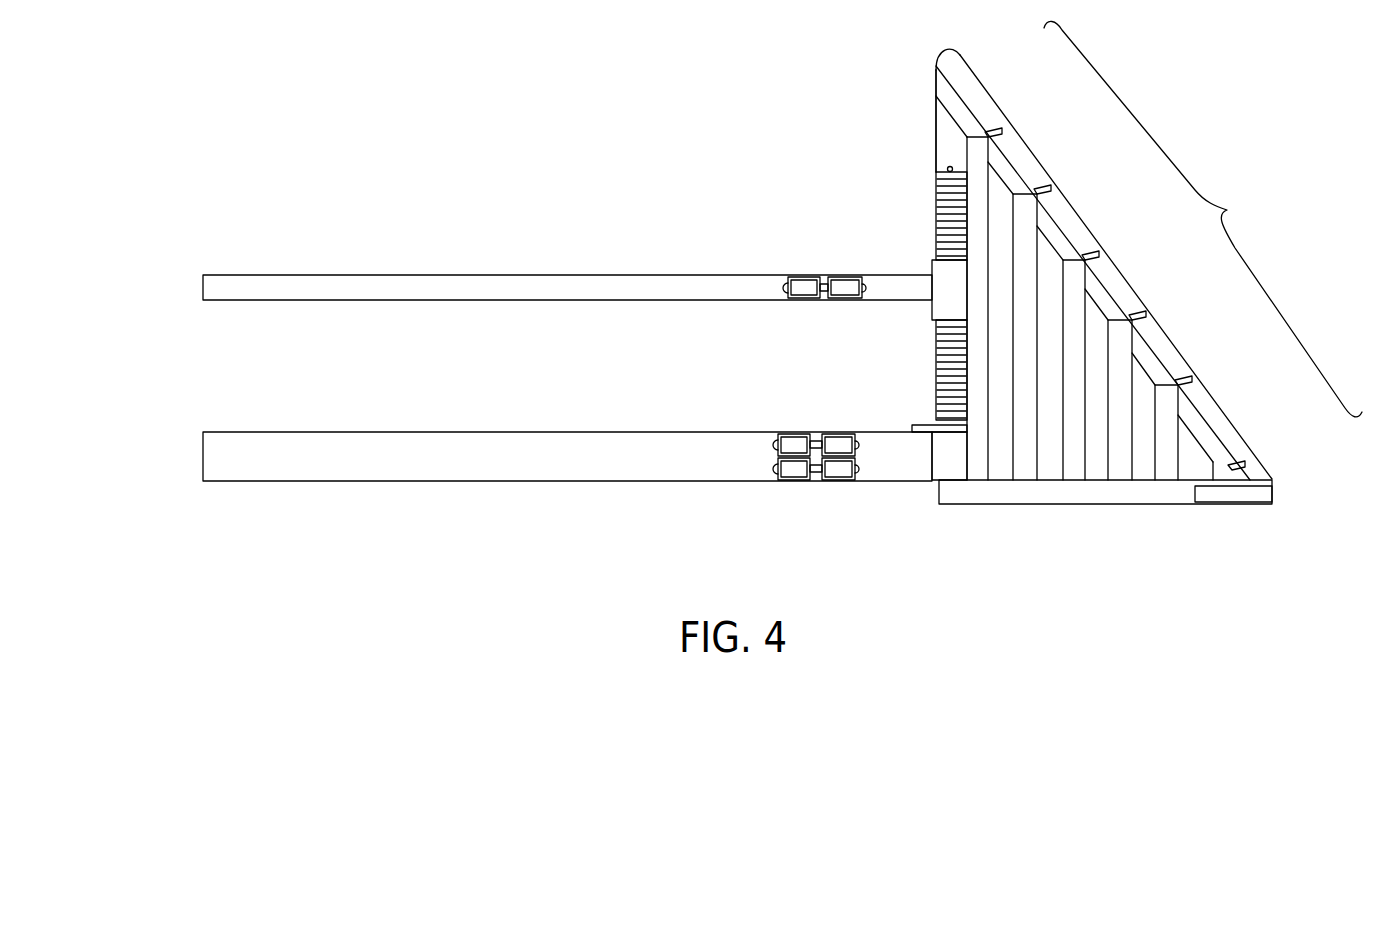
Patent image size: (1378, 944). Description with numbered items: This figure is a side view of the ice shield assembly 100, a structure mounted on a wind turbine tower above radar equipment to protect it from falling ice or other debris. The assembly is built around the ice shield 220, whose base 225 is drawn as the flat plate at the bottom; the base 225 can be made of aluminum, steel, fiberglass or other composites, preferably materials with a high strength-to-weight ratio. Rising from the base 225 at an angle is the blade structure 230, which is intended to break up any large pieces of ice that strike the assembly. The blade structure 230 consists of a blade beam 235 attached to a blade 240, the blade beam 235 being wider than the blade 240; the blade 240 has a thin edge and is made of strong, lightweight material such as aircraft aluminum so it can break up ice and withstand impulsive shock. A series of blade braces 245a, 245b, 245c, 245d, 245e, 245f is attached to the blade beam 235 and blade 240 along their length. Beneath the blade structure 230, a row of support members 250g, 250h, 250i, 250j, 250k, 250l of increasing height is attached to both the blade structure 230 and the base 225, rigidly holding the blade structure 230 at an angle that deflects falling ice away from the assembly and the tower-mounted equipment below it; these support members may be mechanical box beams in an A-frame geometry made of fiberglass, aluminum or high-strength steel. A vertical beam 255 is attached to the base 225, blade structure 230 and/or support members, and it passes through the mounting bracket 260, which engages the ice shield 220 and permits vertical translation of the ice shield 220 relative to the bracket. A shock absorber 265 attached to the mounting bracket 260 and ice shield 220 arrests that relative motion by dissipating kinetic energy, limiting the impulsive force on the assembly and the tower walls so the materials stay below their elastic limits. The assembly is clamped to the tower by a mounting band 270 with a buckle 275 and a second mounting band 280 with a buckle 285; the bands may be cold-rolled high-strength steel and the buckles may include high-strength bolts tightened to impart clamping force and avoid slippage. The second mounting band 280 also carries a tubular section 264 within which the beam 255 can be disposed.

The ice shield assembly 100 is at (250, 537).
The ice shield 220 is at (836, 104).
The base 225 is at (1253, 493).
The blade structure 230 is at (1203, 219).
The blade beam 235 is at (1200, 423).
The blade 240 is at (968, 90).
The blade brace 245a is at (1243, 462).
The blade brace 245b is at (1187, 377).
The blade brace 245c is at (1143, 314).
The blade brace 245d is at (1093, 252).
The blade brace 245e is at (1047, 186).
The blade brace 245f is at (1000, 130).
The support member 250g is at (978, 468).
The support member 250h is at (1025, 468).
The support member 250i is at (1073, 468).
The support member 250j is at (1120, 468).
The support member 250k is at (1167, 468).
The support member 250l is at (1213, 468).
The beam 255 is at (952, 150).
The mounting bracket 260 is at (947, 447).
The second tubular section 264 is at (944, 283).
The shock absorber 265 is at (950, 352).
The mounting band 270 is at (372, 470).
The buckle 275 is at (793, 478).
The second mounting band 280 is at (405, 290).
The buckle 285 is at (818, 272).